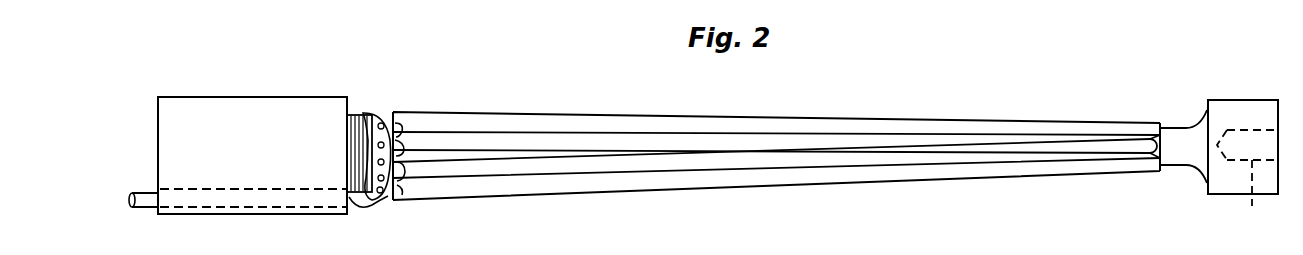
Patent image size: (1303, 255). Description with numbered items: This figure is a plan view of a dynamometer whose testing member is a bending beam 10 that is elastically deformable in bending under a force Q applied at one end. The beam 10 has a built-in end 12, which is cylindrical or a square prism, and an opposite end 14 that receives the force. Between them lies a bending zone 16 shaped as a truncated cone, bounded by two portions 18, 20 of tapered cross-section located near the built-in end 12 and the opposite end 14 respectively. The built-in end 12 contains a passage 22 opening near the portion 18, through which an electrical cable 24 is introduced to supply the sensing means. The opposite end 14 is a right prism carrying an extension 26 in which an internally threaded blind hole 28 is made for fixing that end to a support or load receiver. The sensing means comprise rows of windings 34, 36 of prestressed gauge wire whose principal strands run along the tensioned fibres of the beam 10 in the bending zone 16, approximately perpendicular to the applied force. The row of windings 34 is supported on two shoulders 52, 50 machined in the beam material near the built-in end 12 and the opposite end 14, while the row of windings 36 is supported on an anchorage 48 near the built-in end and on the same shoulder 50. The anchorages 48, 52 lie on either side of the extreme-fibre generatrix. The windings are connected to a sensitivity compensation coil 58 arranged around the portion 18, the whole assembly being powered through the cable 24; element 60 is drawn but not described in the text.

The bending beam 10 is at (790, 108).
The built-in end 12 is at (238, 110).
The opposite end 14 is at (1220, 110).
The bending zone 16 is at (858, 177).
The portion of tapered cross-section 18 is at (383, 200).
The portion of tapered cross-section 20 is at (1185, 163).
The passage 22 is at (219, 203).
The electrical cable 24 is at (150, 206).
The extension 26 is at (1280, 110).
The internally threaded blind hole 28 is at (1250, 208).
The row of windings 34 is at (608, 160).
The row of windings 36 is at (596, 150).
The anchorage 48 is at (400, 128).
The shoulder 50 is at (1152, 146).
The shoulder 52 is at (401, 168).
The sensitivity compensation coil 58 is at (372, 113).
The element 60 is at (1010, 240).